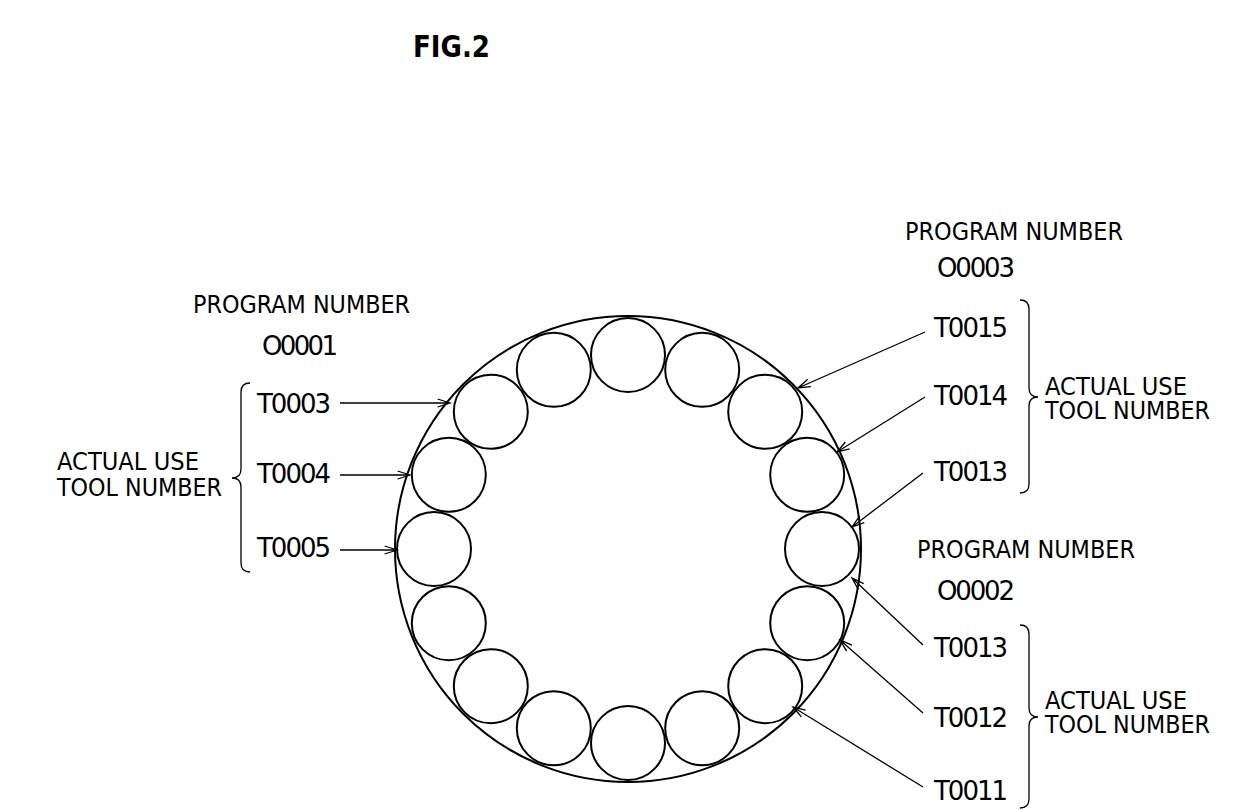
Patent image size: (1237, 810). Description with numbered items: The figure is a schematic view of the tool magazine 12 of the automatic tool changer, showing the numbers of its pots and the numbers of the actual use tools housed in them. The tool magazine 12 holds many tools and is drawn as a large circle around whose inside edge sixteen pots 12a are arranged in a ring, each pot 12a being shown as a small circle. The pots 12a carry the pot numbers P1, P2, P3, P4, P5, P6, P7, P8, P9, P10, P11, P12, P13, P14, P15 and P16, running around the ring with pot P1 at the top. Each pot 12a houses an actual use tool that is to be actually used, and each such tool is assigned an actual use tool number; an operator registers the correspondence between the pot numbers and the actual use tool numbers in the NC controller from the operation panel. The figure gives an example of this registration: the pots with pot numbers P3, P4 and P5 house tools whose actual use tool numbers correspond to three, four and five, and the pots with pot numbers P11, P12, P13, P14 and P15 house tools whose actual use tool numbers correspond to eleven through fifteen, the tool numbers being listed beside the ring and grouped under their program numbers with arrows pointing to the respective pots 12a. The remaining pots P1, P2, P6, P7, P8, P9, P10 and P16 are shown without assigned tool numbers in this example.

The tool magazine 12 is at (681, 280).
The pot 12a is at (628, 520).
The pot number P1 is at (628, 355).
The pot number P2 is at (554, 370).
The pot number P3 is at (491, 412).
The pot number P4 is at (449, 475).
The pot number P5 is at (434, 549).
The pot number P6 is at (449, 623).
The pot number P7 is at (491, 686).
The pot number P8 is at (554, 728).
The pot number P9 is at (628, 743).
The pot number P10 is at (702, 728).
The pot number P11 is at (765, 686).
The pot number P12 is at (807, 623).
The pot number P13 is at (822, 549).
The pot number P14 is at (807, 475).
The pot number P15 is at (765, 412).
The pot number P16 is at (702, 370).